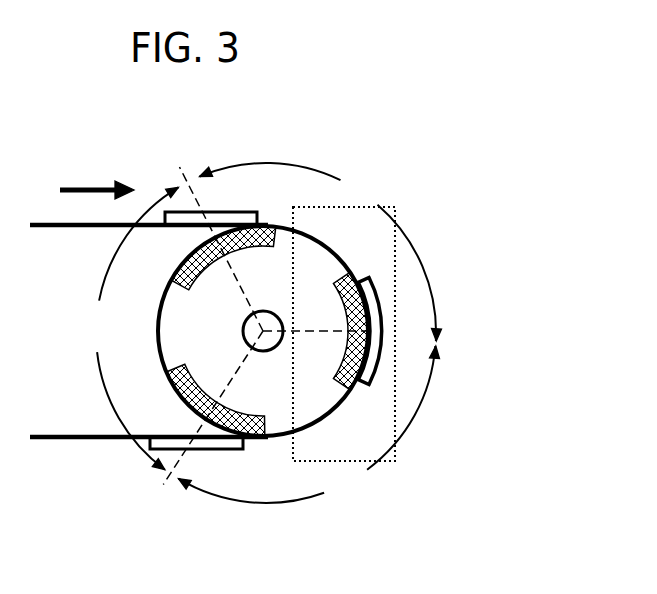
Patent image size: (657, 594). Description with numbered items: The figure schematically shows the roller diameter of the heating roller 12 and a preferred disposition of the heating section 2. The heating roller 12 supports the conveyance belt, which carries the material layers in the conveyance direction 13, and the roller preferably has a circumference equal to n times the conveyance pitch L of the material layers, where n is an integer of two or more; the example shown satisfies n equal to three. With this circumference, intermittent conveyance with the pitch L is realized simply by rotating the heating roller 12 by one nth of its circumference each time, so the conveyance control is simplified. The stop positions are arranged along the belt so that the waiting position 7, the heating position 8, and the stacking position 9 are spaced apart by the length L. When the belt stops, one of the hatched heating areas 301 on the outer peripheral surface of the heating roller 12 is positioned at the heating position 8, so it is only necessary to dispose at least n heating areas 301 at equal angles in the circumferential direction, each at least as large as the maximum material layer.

The heating section 2 is at (395, 283).
The heating roller 12 is at (318, 266).
The heating area 301 is at (180, 270).
The waiting position 7 is at (216, 200).
The heating position 8 is at (396, 346).
The stacking position 9 is at (203, 461).
The conveyance direction 13 is at (95, 184).
The conveyance pitch L is at (260, 335).